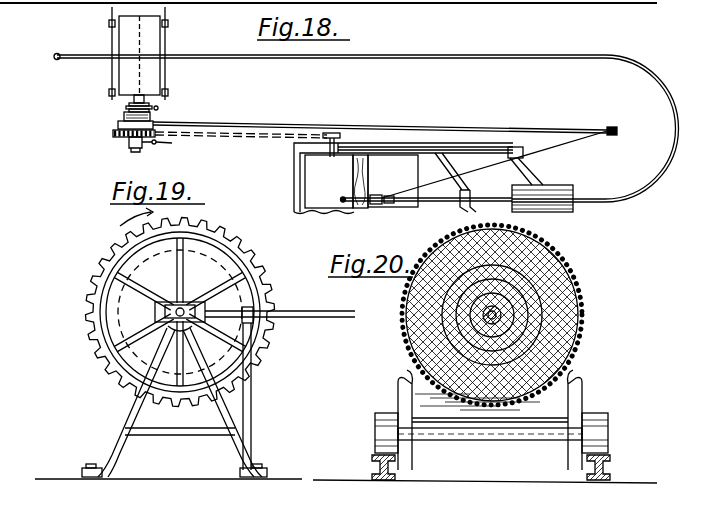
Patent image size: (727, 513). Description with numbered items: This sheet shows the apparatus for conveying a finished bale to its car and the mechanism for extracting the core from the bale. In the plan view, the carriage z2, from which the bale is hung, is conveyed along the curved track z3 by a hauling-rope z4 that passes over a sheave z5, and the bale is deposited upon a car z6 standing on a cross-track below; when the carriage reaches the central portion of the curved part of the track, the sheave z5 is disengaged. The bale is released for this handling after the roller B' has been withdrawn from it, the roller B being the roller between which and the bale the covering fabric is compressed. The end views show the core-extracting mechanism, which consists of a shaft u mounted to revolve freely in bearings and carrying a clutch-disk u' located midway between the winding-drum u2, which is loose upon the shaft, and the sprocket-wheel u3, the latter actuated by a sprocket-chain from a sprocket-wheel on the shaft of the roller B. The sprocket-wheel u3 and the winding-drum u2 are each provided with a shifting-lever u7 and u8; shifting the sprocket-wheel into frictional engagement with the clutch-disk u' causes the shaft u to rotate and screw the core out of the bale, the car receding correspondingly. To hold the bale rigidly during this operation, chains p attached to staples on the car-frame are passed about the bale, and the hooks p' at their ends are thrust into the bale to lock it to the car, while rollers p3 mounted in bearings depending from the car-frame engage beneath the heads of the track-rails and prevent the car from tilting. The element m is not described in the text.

In FIG. 18, the car z6 is at (160, 78).
In FIG. 20, the car z6 is at (398, 397).
In FIG. 18, the curved track z3 is at (664, 164).
In FIG. 18, the hauling-rope z4 is at (446, 129).
In FIG. 18, the sheave z5 is at (612, 127).
In FIG. 18, the carriage z2 is at (375, 205).
In FIG. 18, the winding-drum u2 is at (122, 115).
In FIG. 18, the clutch-disk u' is at (113, 118).
In FIG. 18, the sprocket-wheel u3 is at (112, 136).
In FIG. 19, the sprocket-wheel u3 is at (87, 315).
In FIG. 18, the shifting-lever u8 is at (158, 108).
In FIG. 18, the shifting-lever u7 is at (167, 149).
In FIG. 19, the shifting-lever u7 is at (340, 306).
In FIG. 19, the shaft u is at (181, 300).
In FIG. 18, the roller B is at (329, 181).
In FIG. 18, the roller B' is at (393, 181).
In FIG. 20, the drum core m is at (503, 315).
In FIG. 20, the chains p is at (479, 315).
In FIG. 20, the hooks p' is at (469, 410).
In FIG. 20, the rollers p3 is at (398, 470).